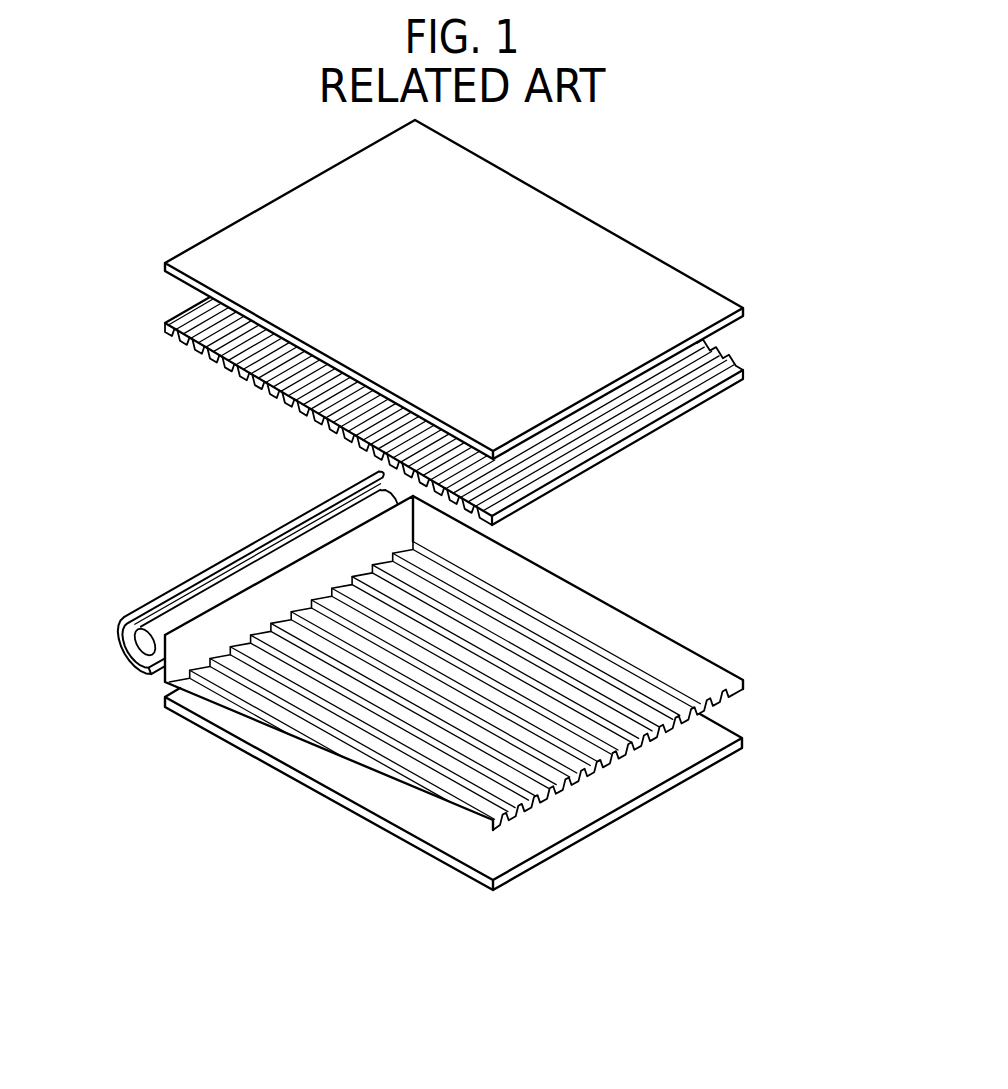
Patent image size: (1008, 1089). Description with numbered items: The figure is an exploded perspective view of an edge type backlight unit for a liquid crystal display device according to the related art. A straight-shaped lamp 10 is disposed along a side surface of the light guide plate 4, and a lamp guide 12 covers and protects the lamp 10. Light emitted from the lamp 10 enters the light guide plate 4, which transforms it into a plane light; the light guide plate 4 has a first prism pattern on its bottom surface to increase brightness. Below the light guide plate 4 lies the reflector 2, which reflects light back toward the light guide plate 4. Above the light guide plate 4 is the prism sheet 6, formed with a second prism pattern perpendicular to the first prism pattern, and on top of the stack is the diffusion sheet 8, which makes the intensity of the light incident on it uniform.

The reflector 2 is at (733, 737).
The light guide plate 4 is at (637, 627).
The prism sheet 6 is at (742, 360).
The diffusion sheet 8 is at (690, 290).
The straight-shaped lamp 10 is at (130, 660).
The lamp guide 12 is at (179, 578).